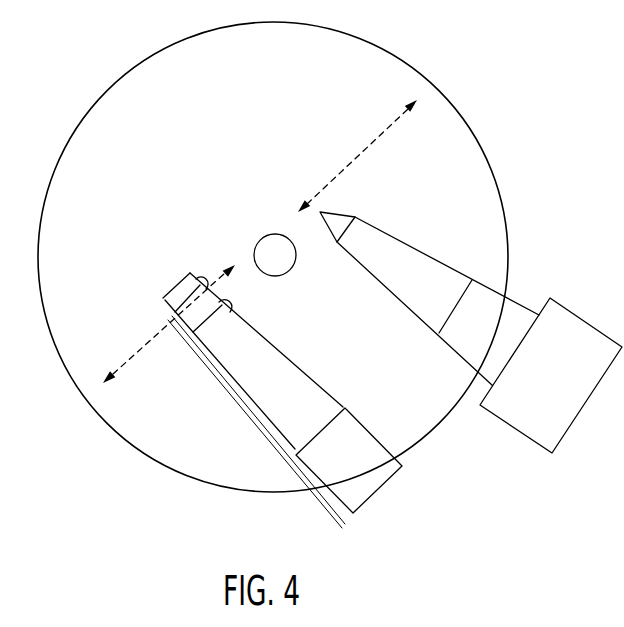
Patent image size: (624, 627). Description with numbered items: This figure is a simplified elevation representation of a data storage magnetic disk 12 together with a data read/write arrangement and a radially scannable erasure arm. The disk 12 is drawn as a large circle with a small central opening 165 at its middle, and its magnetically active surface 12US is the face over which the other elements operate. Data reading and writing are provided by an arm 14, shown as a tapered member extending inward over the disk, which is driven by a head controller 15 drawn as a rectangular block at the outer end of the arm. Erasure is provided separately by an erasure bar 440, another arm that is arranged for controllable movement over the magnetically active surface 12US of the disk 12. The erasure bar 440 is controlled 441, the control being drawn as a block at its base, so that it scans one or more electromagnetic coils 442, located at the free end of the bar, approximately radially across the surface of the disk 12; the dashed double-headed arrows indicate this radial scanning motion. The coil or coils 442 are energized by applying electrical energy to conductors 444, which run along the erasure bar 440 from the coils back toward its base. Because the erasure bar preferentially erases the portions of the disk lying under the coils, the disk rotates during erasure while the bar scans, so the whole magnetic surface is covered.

The data storage magnetic disk 12 is at (492, 168).
The magnetically active surface 12US is at (438, 142).
The arm 14 is at (412, 252).
The head controller 15 is at (523, 432).
The center hole of disk 165 is at (258, 240).
The erasure bar 440 is at (290, 388).
The control 441 is at (375, 483).
The electromagnetic coil 442 is at (222, 310).
The conductors 444 is at (322, 500).